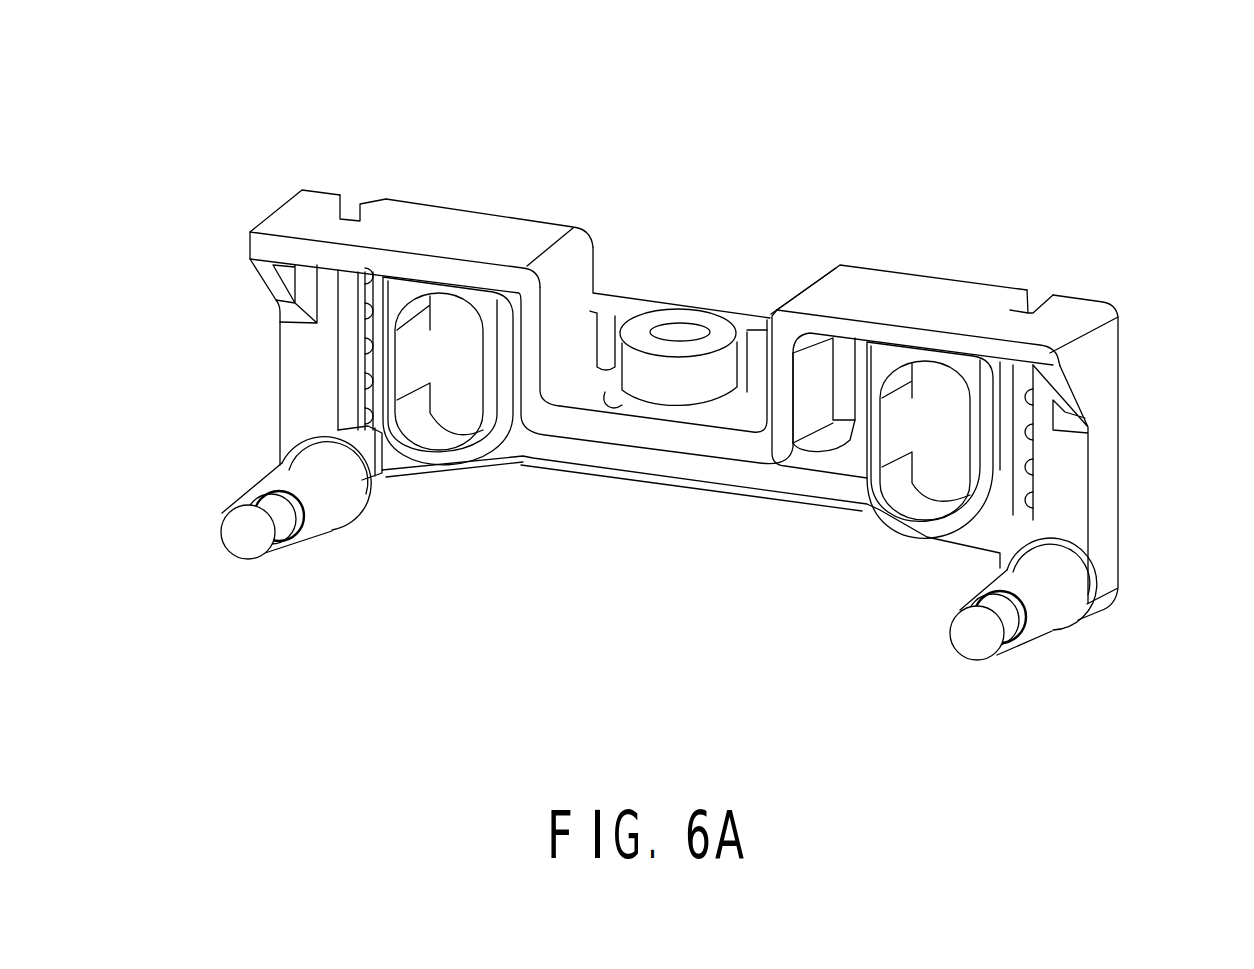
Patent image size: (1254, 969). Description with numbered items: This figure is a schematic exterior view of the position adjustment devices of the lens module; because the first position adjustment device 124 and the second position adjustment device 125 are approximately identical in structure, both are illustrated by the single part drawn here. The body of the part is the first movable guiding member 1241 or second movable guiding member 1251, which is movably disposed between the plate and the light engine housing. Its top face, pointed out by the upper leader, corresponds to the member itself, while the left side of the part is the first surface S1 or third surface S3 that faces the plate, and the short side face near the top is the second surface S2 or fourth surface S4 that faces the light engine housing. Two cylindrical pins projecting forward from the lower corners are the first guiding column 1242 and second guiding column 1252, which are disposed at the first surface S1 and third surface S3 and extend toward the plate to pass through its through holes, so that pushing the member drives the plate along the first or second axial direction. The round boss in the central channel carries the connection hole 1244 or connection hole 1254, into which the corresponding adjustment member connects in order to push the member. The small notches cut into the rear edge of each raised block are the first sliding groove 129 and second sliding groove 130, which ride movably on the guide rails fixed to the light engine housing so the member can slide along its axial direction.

The first position adjustment device 124 is at (667, 408).
The second position adjustment device 125 is at (1230, 72).
The first sliding groove 129 is at (754, 174).
The second sliding groove 130 is at (390, 176).
The first movable guiding member 1241 is at (421, 214).
The second movable guiding member 1251 is at (466, 222).
The first guiding column 1242 is at (658, 608).
The second guiding column 1252 is at (250, 545).
The connection hole 1244 is at (722, 286).
The connection hole 1254 is at (686, 316).
The first surface S1 is at (211, 348).
The third surface S3 is at (306, 396).
The second surface S2 is at (655, 271).
The fourth surface S4 is at (567, 204).